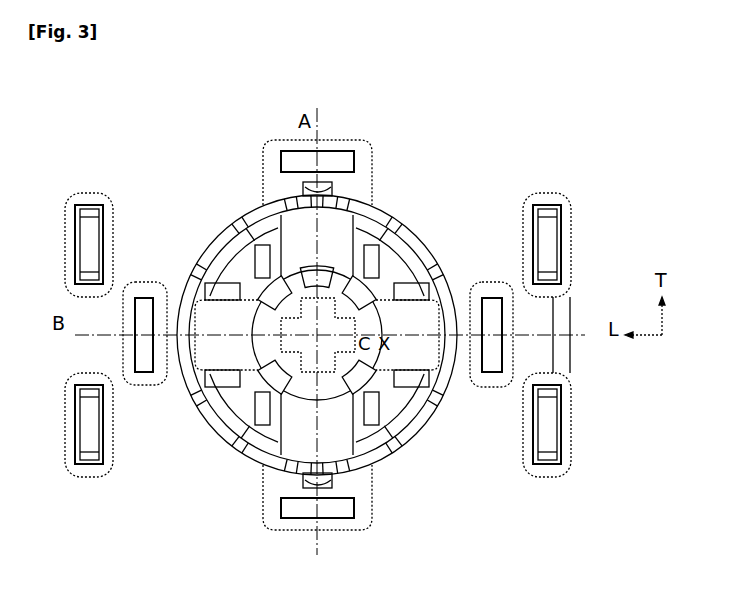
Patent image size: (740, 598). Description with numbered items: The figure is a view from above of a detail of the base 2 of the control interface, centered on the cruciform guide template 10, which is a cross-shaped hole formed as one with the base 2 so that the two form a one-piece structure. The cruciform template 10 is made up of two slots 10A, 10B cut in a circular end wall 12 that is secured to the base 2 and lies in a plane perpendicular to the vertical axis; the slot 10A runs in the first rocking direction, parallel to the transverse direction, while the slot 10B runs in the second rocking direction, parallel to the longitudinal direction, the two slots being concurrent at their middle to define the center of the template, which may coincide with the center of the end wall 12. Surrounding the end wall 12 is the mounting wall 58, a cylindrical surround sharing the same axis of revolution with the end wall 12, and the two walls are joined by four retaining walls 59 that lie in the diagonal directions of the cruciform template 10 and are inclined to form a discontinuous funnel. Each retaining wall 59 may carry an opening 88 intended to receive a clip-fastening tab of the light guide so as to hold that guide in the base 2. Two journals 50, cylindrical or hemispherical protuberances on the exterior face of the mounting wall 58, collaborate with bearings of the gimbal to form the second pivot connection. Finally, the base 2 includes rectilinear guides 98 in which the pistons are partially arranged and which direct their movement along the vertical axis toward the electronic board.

The base 2 is at (550, 180).
The cruciform guide template 10 is at (480, 136).
The slot 10A is at (323, 293).
The slot 10B is at (350, 312).
The end wall 12 is at (259, 262).
The journal 50 is at (337, 200).
The mounting wall 58 is at (208, 247).
The retaining wall 59 is at (245, 430).
The opening 88 is at (240, 408).
The rectilinear guide 98 is at (278, 151).